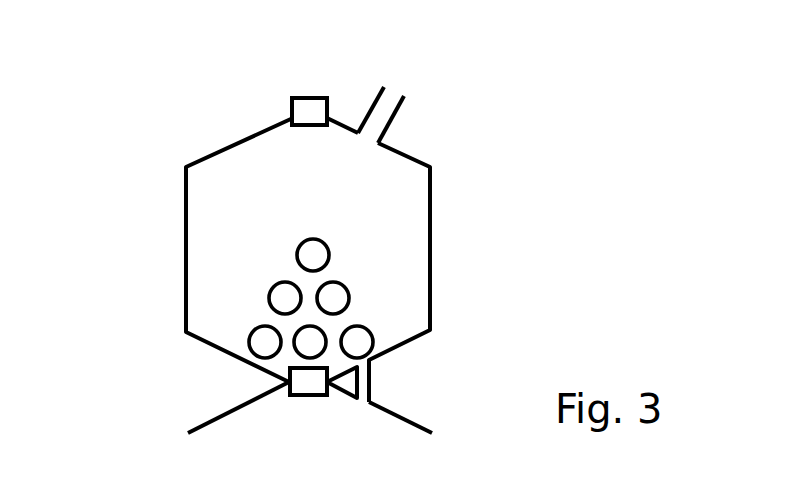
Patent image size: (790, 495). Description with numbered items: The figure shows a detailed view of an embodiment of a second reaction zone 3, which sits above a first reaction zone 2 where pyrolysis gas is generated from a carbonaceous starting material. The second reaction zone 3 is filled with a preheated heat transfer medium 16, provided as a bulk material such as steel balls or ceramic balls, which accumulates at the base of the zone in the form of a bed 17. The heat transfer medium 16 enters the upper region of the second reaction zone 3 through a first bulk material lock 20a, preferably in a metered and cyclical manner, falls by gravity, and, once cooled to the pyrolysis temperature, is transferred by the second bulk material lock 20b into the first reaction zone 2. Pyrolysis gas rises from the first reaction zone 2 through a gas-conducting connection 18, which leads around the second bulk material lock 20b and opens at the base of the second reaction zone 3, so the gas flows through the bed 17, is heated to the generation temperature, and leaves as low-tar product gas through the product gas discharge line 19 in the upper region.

The first reaction zone 2 is at (212, 418).
The second reaction zone 3 is at (432, 240).
The heat transfer medium 16 is at (275, 282).
The bed 17 is at (348, 224).
The gas-conducting connection 18 is at (372, 376).
The product gas discharge line 19 is at (398, 111).
The first bulk material lock 20a is at (291, 110).
The second bulk material lock 20b is at (289, 382).